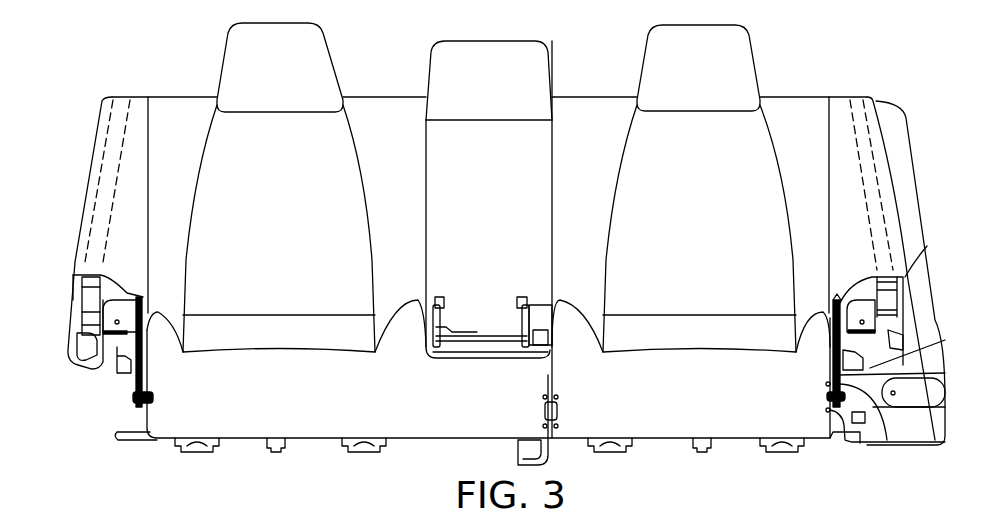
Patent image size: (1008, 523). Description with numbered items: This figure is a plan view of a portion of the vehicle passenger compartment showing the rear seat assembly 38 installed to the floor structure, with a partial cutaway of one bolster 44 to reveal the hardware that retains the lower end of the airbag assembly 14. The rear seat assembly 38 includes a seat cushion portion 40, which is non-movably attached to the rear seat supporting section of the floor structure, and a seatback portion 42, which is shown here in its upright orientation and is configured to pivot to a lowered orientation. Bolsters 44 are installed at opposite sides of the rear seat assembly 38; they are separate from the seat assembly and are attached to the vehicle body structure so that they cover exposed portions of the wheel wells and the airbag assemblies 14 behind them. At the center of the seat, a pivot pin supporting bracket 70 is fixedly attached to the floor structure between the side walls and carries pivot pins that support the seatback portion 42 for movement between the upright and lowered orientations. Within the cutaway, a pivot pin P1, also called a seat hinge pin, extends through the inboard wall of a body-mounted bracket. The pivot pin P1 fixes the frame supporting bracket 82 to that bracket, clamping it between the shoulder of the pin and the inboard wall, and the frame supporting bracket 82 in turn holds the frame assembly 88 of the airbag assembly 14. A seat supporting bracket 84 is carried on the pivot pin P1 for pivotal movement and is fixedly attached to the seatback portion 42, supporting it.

The rear seat assembly 38 is at (385, 90).
The seatback portion 42 is at (587, 122).
The bolsters 44 is at (107, 167).
The airbag assembly 14 is at (906, 293).
The frame assembly 88 is at (858, 346).
The pivot pin P1 is at (826, 395).
The frame supporting bracket 82 is at (870, 414).
The seat supporting bracket 84 is at (847, 438).
The seat cushion portion 40 is at (303, 403).
The pivot pin supporting bracket 70 is at (555, 448).